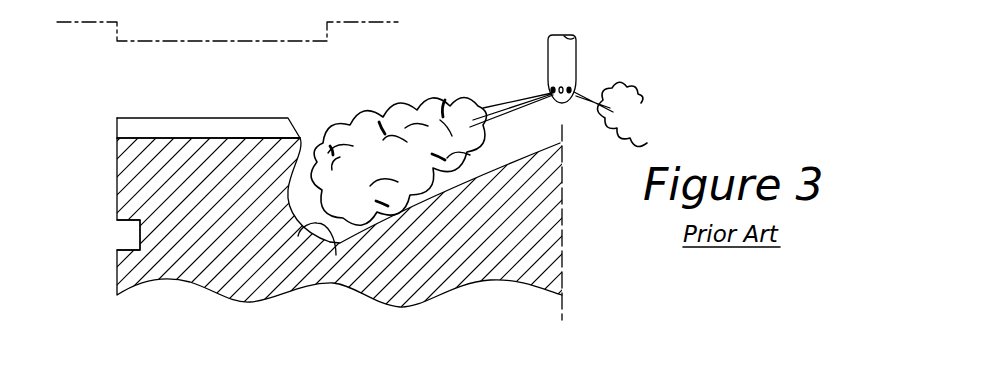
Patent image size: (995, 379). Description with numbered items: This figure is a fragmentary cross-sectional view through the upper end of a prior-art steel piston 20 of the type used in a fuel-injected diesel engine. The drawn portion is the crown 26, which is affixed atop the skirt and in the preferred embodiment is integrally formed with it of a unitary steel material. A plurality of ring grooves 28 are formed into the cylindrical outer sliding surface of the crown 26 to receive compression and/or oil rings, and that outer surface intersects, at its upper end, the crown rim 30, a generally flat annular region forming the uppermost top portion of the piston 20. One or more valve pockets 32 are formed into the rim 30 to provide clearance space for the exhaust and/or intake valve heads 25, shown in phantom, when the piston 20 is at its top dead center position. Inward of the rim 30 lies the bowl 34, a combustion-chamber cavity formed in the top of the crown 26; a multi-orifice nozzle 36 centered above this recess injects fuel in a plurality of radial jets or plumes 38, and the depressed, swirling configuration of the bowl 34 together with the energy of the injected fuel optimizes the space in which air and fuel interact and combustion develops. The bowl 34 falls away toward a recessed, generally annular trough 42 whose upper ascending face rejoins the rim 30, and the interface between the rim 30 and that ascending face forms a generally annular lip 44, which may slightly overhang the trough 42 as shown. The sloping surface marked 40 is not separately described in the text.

The piston 20 is at (583, 300).
The valve heads 25 is at (137, 42).
The crown 26 is at (115, 115).
The ring grooves 28 is at (122, 243).
The crown rim 30 is at (203, 118).
The valve pockets 32 is at (258, 138).
The bowl 34 is at (359, 83).
The multi-orifice nozzle 36 is at (549, 61).
The fuel plumes 38 is at (427, 116).
The inclined surface of groove 40 is at (560, 143).
The trough 42 is at (336, 255).
The lip 44 is at (304, 156).